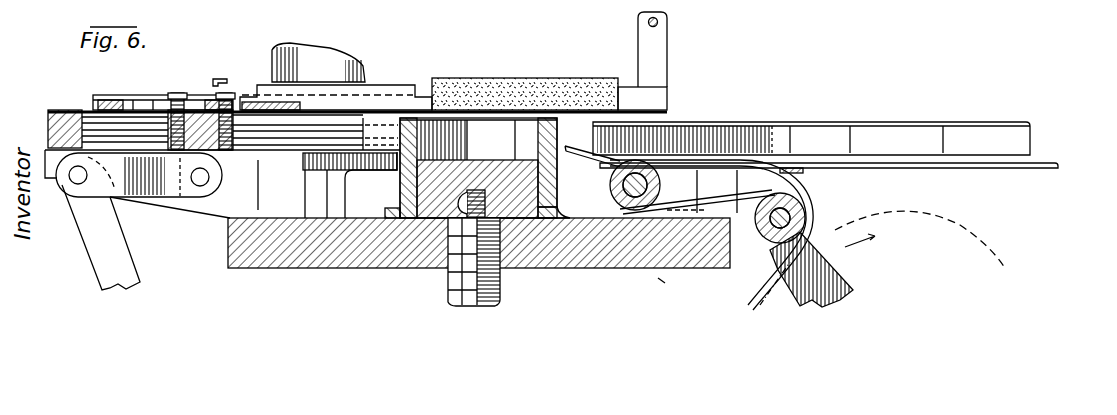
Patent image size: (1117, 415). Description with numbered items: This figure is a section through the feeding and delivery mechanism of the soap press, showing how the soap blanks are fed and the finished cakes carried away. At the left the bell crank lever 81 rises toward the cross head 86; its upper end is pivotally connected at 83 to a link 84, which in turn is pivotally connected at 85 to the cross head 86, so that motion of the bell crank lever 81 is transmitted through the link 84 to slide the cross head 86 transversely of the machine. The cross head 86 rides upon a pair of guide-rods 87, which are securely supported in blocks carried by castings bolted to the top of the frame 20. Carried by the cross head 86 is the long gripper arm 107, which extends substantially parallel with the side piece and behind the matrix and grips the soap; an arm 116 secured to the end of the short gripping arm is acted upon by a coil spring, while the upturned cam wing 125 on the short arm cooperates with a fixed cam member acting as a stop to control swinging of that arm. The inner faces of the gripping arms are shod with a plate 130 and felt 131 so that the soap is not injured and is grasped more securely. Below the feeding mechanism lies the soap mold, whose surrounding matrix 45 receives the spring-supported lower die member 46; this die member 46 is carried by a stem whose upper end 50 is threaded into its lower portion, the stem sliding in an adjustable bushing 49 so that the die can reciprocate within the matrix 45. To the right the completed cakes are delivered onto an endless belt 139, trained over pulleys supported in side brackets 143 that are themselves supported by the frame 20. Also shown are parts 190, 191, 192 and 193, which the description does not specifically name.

The frame 20 is at (676, 287).
The surrounding matrix 45 is at (403, 187).
The lower die member 46 is at (373, 268).
The adjustable bushing 49 is at (500, 292).
The upper end of the stem 50 is at (488, 158).
The bell crank lever 81 is at (108, 268).
The pivotal connection 83 is at (78, 177).
The link 84 is at (167, 183).
The pivotal connection 85 is at (200, 183).
The cross head 86 is at (197, 113).
The guide-rods 87 is at (107, 127).
The long gripper arm 107 is at (628, 95).
The arm 116 is at (222, 82).
The cam wing 125 is at (322, 78).
The plate 130 is at (377, 92).
The felt 131 is at (535, 97).
The endless belt 139 is at (1052, 162).
The side brackets 143 is at (732, 130).
The cam 190 is at (925, 218).
The roller 191 is at (807, 208).
The roller 192 is at (658, 183).
The spring lever 193 is at (689, 228).